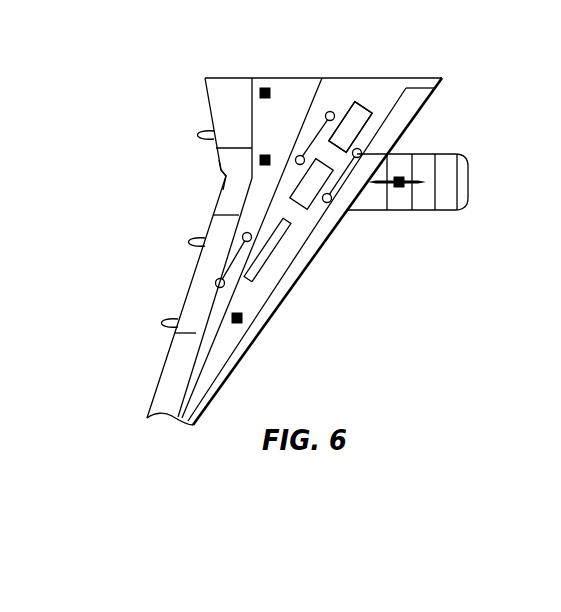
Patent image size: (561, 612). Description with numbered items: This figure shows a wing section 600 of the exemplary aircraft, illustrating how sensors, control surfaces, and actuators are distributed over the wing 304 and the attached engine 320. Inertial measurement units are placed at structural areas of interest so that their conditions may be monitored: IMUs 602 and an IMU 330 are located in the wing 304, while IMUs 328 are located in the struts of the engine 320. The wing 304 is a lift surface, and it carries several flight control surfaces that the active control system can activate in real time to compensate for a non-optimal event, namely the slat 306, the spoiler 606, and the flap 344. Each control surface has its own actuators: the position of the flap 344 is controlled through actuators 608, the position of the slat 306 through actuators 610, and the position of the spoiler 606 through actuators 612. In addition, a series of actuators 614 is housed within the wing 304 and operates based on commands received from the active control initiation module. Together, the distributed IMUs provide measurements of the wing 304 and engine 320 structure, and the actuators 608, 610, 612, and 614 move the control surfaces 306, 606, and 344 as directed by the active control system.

The wing section 600 is at (132, 81).
The IMU 602 is at (266, 88).
The actuator 612 is at (312, 142).
The wing 304 is at (355, 100).
The spoiler 606 is at (376, 117).
The slat 306 is at (407, 117).
The flap 344 is at (225, 175).
The engine 320 is at (469, 190).
The actuator 610 is at (340, 183).
The IMU 328 is at (403, 189).
The actuator 608 is at (228, 270).
The actuator 614 is at (275, 252).
The IMU 330 is at (243, 319).